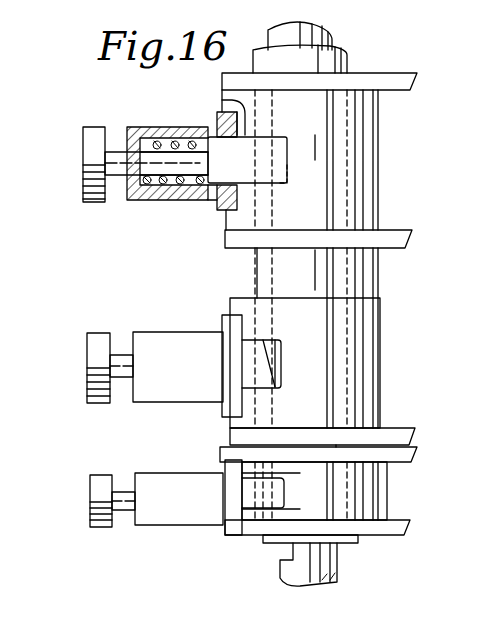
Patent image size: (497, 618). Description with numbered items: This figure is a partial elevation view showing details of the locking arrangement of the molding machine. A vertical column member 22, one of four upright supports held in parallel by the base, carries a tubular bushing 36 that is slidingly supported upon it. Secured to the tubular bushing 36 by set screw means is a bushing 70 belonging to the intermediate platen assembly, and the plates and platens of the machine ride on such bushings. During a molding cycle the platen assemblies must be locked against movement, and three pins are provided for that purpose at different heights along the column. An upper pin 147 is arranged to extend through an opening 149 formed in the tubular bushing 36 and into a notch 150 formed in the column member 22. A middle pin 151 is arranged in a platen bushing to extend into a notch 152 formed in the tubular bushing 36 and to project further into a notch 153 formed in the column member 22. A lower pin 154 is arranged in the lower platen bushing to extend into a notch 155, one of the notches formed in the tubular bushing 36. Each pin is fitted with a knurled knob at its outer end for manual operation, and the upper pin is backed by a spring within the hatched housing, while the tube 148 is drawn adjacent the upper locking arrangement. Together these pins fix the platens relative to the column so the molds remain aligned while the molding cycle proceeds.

The column member 22 is at (313, 43).
The tubular bushing 36 is at (347, 272).
The bushing 70 is at (226, 221).
The pin 147 is at (87, 161).
The tube 148 is at (222, 104).
The opening 149 is at (249, 130).
The notch 150 is at (288, 168).
The pin 151 is at (120, 355).
The notch 152 is at (265, 342).
The notch 153 is at (292, 552).
The pin 154 is at (122, 490).
The notch 155 is at (280, 479).